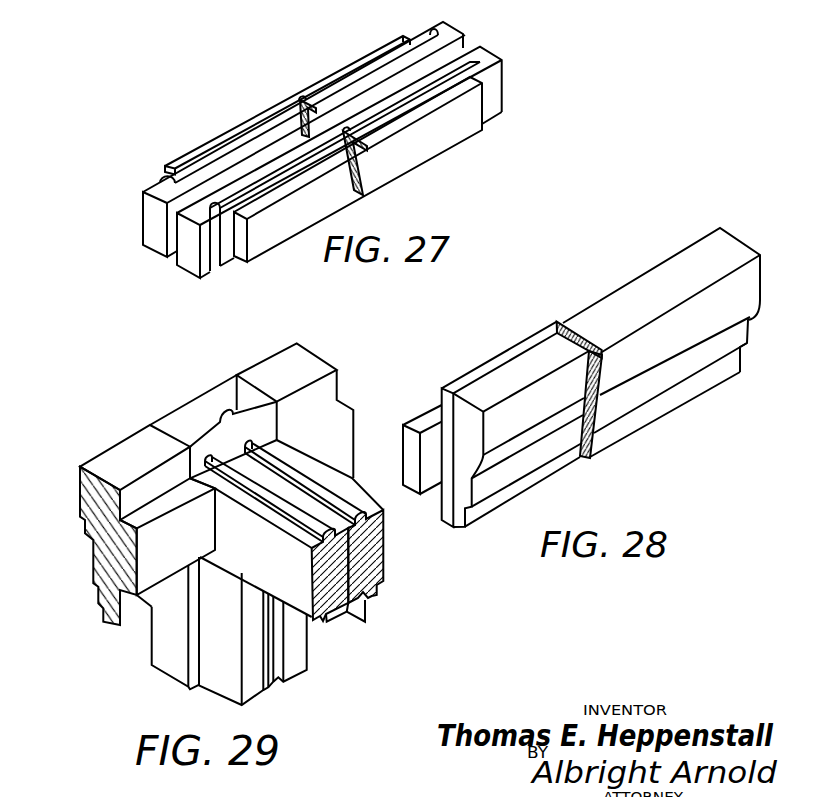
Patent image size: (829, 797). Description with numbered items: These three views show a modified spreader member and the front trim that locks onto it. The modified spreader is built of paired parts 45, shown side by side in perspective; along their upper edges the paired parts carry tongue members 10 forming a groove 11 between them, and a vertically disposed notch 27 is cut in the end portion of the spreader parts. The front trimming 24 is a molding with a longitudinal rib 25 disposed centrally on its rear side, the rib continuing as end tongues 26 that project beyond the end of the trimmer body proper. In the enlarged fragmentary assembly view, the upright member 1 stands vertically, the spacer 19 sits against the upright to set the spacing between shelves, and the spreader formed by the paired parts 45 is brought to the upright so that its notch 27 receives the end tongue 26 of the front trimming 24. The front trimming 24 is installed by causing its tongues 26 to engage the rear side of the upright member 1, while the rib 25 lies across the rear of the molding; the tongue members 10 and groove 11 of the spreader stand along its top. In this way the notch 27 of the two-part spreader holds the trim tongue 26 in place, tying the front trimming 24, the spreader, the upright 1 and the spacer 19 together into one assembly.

In FIG. 29, the upright member 1 is at (222, 430).
In FIG. 29, the tongue members 10 is at (366, 619).
In FIG. 29, the groove 11 is at (347, 605).
In FIG. 29, the spacer 19 is at (252, 685).
In FIG. 28, the front trimming 24 is at (642, 415).
In FIG. 29, the front trimming 24 is at (262, 380).
In FIG. 28, the longitudinal rib 25 is at (442, 410).
In FIG. 29, the longitudinal rib 25 is at (170, 562).
In FIG. 28, the end tongues 26 is at (412, 455).
In FIG. 29, the end tongues 26 is at (213, 481).
In FIG. 27, the notch 27 is at (233, 263).
In FIG. 29, the notch 27 is at (262, 452).
In FIG. 27, the paired parts 45 is at (295, 182).
In FIG. 29, the paired parts 45 is at (328, 580).